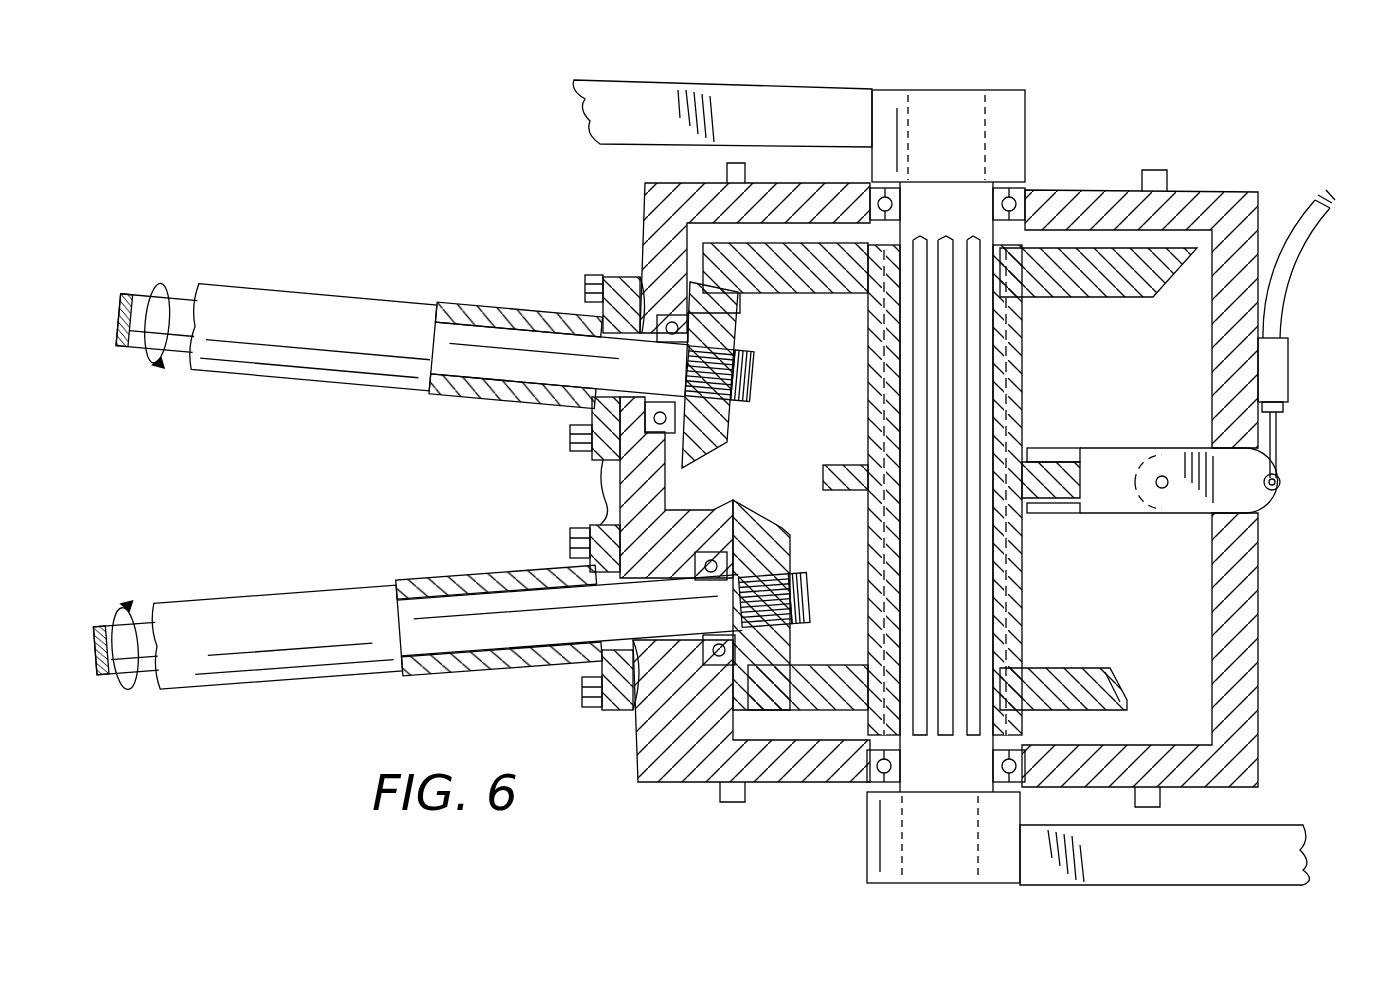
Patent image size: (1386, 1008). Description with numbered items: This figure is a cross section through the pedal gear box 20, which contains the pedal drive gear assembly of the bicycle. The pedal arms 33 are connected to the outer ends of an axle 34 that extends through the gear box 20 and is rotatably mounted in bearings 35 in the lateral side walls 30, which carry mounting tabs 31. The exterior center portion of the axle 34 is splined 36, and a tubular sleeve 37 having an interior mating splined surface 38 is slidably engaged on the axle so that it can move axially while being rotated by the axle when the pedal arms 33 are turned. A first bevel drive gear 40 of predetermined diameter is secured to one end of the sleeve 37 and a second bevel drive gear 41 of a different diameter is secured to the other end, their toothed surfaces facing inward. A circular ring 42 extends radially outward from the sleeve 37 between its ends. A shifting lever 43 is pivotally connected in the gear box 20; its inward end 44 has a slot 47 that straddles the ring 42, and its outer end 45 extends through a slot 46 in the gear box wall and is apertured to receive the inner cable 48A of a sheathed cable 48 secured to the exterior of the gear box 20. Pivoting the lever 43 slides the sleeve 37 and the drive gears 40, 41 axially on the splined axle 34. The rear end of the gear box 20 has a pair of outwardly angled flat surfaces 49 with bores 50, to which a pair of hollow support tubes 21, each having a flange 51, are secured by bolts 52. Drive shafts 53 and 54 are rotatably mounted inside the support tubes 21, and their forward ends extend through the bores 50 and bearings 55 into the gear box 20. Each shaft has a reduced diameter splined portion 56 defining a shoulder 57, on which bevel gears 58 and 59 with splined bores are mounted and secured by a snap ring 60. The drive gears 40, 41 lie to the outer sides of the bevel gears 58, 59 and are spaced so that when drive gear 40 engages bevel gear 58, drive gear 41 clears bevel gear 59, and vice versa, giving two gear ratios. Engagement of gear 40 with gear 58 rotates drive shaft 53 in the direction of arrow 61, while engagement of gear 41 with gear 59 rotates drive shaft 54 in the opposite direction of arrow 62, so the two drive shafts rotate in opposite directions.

The pedal gear box 20 is at (1262, 672).
The hollow support tube 21 is at (342, 395).
The lateral side wall 30 is at (1216, 192).
The mounting tab 31 is at (748, 175).
The pedal arm 33 is at (722, 88).
The axle 34 is at (915, 790).
The bearing 35 is at (1028, 196).
The splined portion of axle 36 is at (980, 330).
The tubular sleeve 37 is at (1022, 588).
The interior mating splined surface 38 is at (1015, 555).
The first bevel drive gear 40 is at (1108, 668).
The second bevel drive gear 41 is at (1168, 290).
The circular ring 42 is at (1080, 450).
The shifting lever 43 is at (1105, 515).
The inward end of shifting lever 44 is at (1050, 513).
The outer end of shifting lever 45 is at (1282, 500).
The slot 46 is at (1240, 545).
The slot in inward end of lever 47 is at (1062, 448).
The sheathed cable 48 is at (1285, 290).
The inner cable 48A is at (1328, 208).
The outwardly angled flat surface 49 is at (643, 240).
The bore 50 is at (641, 278).
The flange 51 is at (600, 492).
The bolt 52 is at (568, 438).
The drive shaft 53 is at (467, 605).
The drive shaft 54 is at (476, 392).
The bearing 55 is at (688, 328).
The reduced diameter splined portion 56 is at (748, 382).
The shoulder 57 is at (685, 362).
The bevel gear 58 is at (752, 500).
The bevel gear 59 is at (725, 442).
The snap ring 60 is at (742, 358).
The arrow 61 is at (122, 615).
The arrow 62 is at (162, 288).